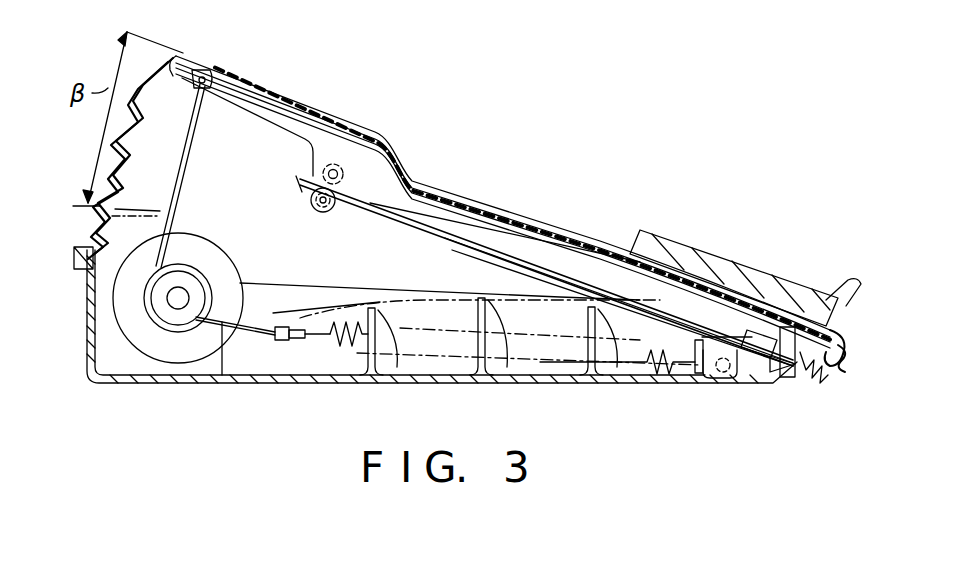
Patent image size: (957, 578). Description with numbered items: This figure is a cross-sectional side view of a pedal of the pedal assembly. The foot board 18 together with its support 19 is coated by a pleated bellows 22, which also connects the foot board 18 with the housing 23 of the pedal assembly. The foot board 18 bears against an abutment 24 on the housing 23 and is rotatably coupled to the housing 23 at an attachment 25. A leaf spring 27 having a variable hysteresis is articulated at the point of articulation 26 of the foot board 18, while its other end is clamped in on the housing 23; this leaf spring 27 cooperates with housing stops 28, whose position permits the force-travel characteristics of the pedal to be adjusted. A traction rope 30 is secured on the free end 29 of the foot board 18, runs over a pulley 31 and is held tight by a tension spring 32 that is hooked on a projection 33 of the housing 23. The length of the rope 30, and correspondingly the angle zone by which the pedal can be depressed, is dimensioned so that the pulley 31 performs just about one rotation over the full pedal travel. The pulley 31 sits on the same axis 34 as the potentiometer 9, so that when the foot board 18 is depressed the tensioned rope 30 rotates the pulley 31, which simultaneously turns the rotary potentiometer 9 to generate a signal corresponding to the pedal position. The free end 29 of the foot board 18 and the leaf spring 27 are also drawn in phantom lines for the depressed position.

The potentiometer 9 is at (137, 350).
The foot board 18 is at (282, 92).
The support 19 is at (750, 275).
The pleated bellows 22 is at (133, 143).
The housing 23 is at (87, 348).
The abutment 24 is at (810, 380).
The attachment 25 is at (725, 374).
The point of articulation 26 is at (322, 172).
The leaf spring 27 is at (455, 298).
The housing stops 28 is at (393, 360).
The free end 29 is at (182, 56).
The traction rope 30 is at (181, 206).
The pulley 31 is at (177, 328).
The tension spring 32 is at (335, 355).
The projection 33 is at (693, 370).
The axis 34 is at (187, 303).